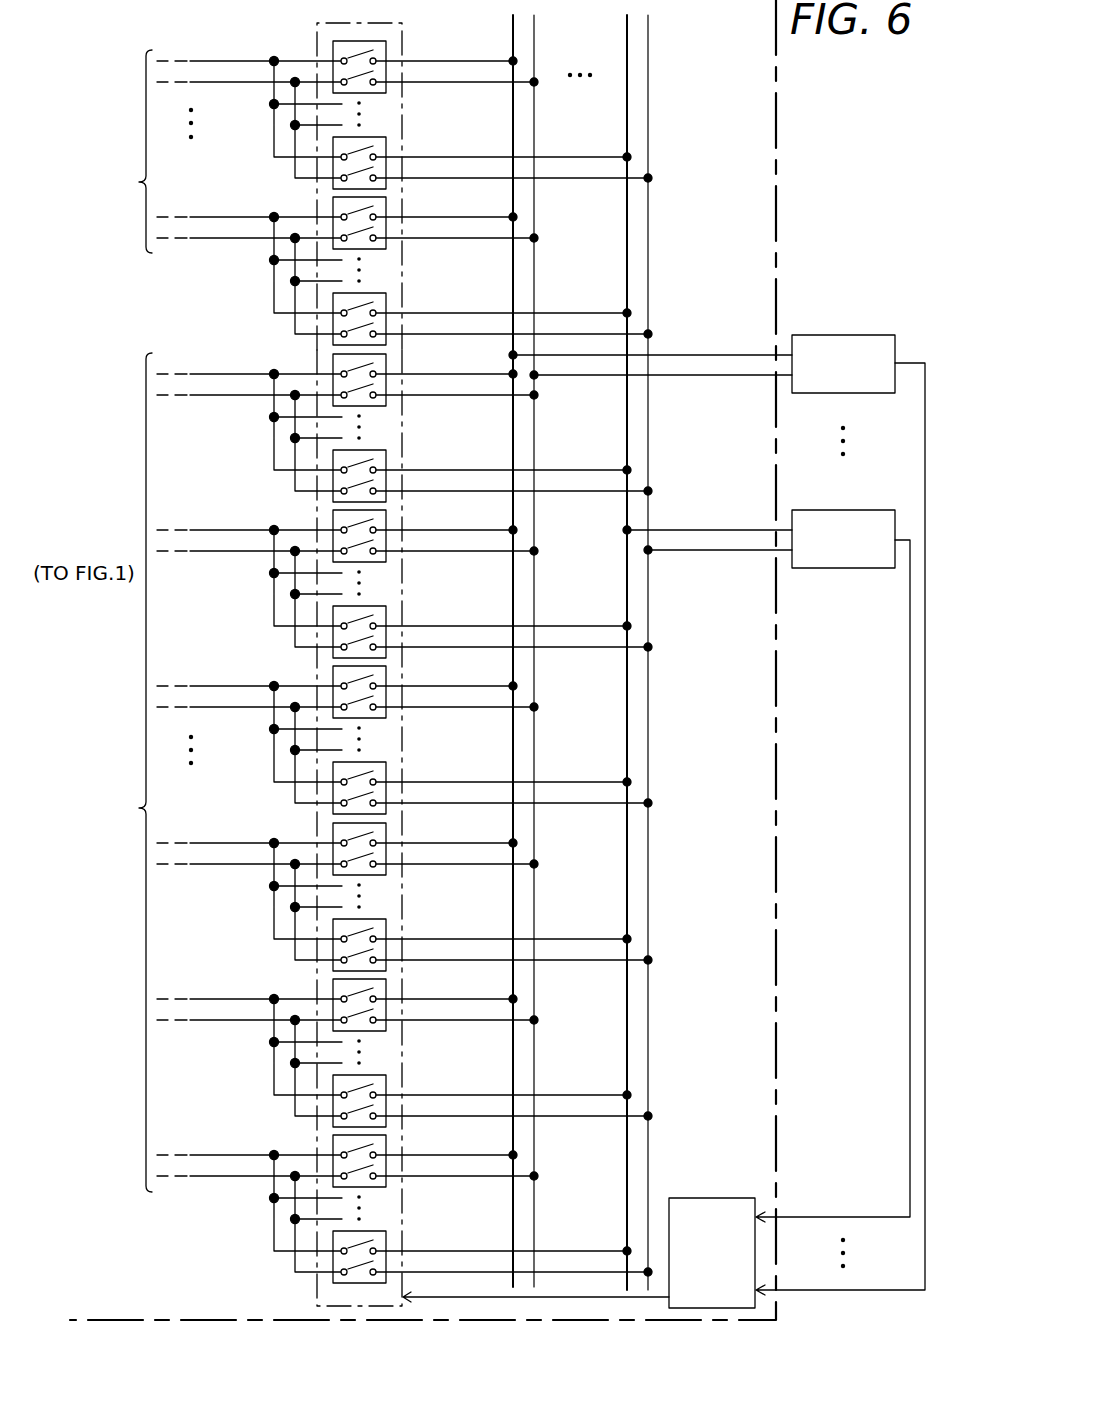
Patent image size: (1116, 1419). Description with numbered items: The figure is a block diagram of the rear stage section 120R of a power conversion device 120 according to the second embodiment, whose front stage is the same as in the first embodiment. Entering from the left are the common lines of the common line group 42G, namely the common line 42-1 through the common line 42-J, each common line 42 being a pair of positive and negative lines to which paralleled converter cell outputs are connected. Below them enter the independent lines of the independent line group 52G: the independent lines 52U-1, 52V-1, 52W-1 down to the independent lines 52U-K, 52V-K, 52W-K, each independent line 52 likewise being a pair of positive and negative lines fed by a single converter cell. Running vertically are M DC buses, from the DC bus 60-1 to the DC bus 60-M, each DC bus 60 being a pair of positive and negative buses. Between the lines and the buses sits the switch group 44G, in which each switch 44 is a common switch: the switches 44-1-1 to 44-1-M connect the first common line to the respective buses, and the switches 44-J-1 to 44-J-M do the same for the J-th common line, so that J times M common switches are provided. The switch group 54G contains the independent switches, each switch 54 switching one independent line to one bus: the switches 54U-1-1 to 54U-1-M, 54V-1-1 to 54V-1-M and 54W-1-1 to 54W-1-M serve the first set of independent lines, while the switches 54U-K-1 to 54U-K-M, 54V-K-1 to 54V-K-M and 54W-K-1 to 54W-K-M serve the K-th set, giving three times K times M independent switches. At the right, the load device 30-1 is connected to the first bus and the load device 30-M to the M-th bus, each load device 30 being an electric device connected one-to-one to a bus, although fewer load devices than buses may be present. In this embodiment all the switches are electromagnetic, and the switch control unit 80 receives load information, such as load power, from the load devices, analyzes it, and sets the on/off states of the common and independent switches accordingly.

The power conversion device 120 is at (777, 50).
The rear stage section 120R is at (492, 660).
The DC bus 60 is at (632, 652).
The DC bus 60-1 is at (513, 30).
The DC bus 60-M is at (627, 93).
The common line 42 is at (120, 190).
The common line group 42G is at (101, 161).
The common line 42-1 is at (207, 61).
The common line 42-J is at (207, 217).
The switch 44 is at (253, 279).
The switch group 44G is at (262, 186).
The switch 44-1-1 is at (388, 52).
The switch 44-1-M is at (380, 137).
The switch 44-J-1 is at (388, 208).
The switch 44-J-M is at (380, 293).
The independent line 52 is at (120, 816).
The independent line group 52G is at (101, 772).
The independent line 52U-1 is at (232, 374).
The independent line 52V-1 is at (207, 530).
The independent line 52W-1 is at (207, 686).
The independent line 52U-K is at (207, 843).
The independent line 52V-K is at (207, 999).
The independent line 52W-K is at (207, 1155).
The switch 54 is at (251, 1221).
The switch group 54G is at (262, 828).
The switch 54U-1-1 is at (388, 365).
The switch 54U-1-M is at (380, 450).
The switch 54V-1-1 is at (388, 521).
The switch 54V-1-M is at (380, 606).
The switch 54W-1-1 is at (388, 677).
The switch 54W-1-M is at (380, 762).
The switch 54U-K-1 is at (388, 834).
The switch 54U-K-M is at (380, 919).
The switch 54V-K-1 is at (388, 990).
The switch 54V-K-M is at (380, 1075).
The switch 54W-K-1 is at (388, 1146).
The switch 54W-K-M is at (380, 1231).
The load device 30 is at (717, 756).
The load device 30-1 is at (812, 335).
The load device 30-M is at (812, 510).
The switch control unit 80 is at (716, 1198).